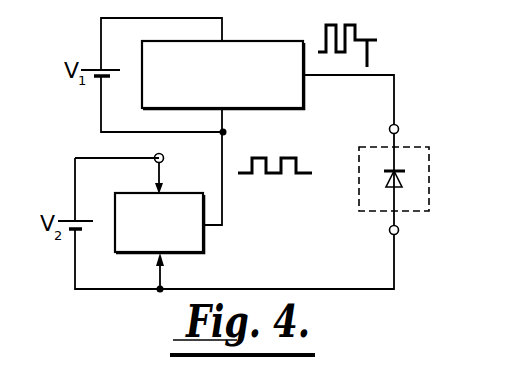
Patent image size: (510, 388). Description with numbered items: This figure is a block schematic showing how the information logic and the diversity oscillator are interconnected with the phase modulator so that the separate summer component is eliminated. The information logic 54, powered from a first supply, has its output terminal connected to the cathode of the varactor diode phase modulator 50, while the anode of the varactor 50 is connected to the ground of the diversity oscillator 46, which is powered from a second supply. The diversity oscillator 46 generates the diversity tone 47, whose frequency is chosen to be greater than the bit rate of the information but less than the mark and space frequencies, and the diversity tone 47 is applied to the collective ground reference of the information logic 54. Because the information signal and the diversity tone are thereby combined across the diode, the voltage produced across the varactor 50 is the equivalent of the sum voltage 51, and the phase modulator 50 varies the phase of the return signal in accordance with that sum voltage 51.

The information logic 54 is at (255, 41).
The sum voltage 51 is at (360, 13).
The diversity tone 47 is at (266, 138).
The varactor diode phase modulator 50 is at (383, 184).
The diversity oscillator 46 is at (203, 241).